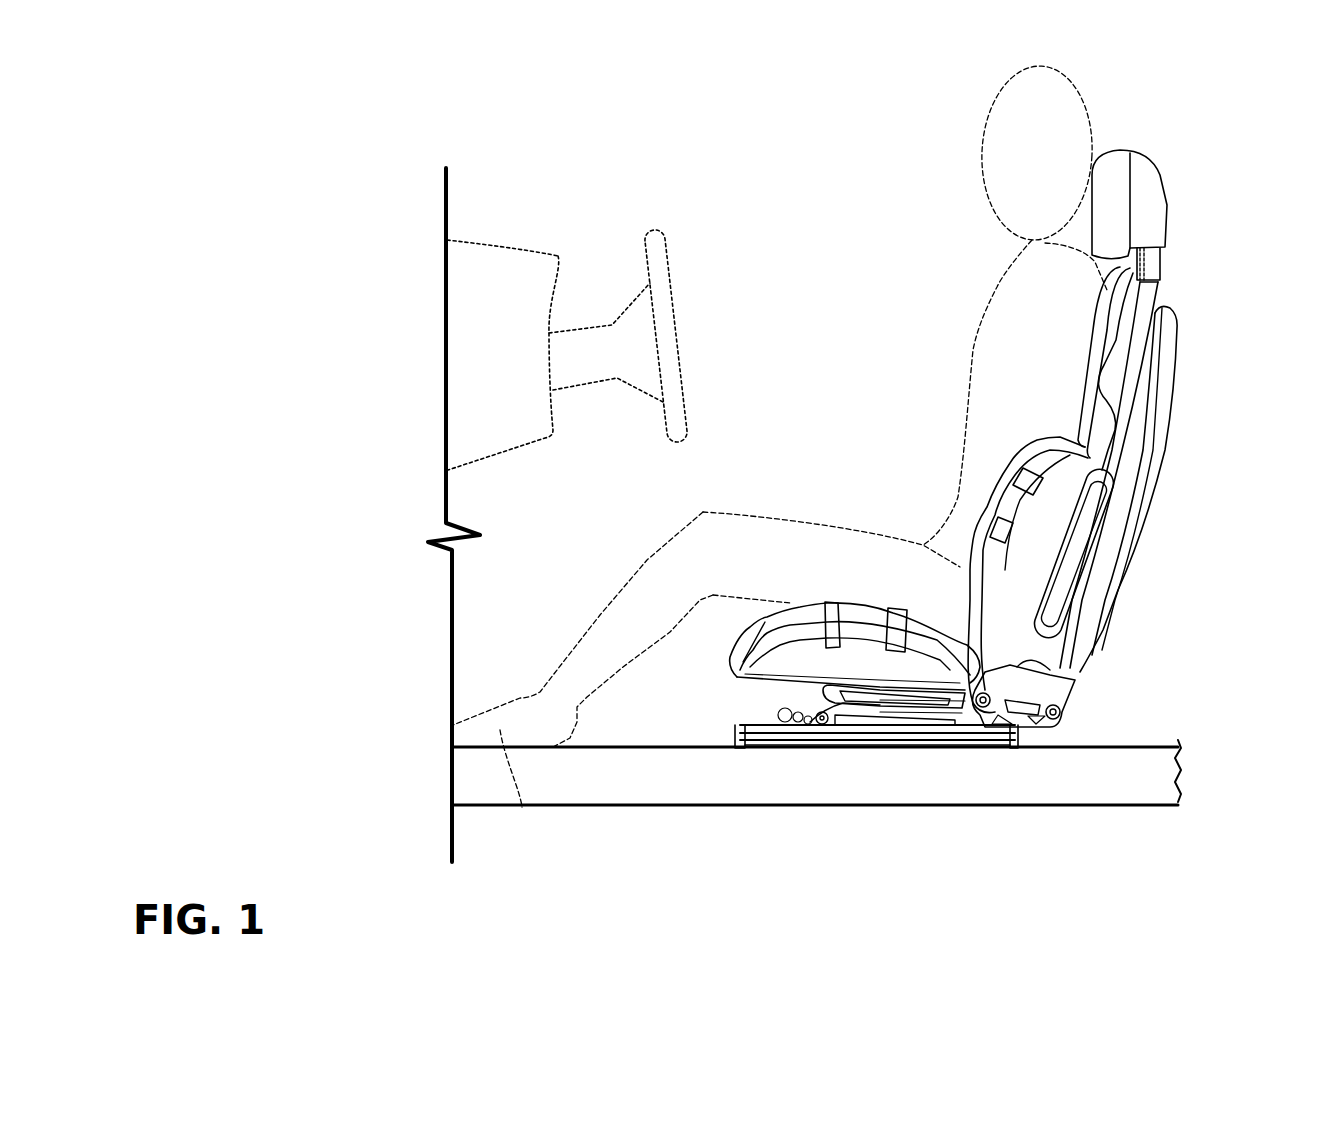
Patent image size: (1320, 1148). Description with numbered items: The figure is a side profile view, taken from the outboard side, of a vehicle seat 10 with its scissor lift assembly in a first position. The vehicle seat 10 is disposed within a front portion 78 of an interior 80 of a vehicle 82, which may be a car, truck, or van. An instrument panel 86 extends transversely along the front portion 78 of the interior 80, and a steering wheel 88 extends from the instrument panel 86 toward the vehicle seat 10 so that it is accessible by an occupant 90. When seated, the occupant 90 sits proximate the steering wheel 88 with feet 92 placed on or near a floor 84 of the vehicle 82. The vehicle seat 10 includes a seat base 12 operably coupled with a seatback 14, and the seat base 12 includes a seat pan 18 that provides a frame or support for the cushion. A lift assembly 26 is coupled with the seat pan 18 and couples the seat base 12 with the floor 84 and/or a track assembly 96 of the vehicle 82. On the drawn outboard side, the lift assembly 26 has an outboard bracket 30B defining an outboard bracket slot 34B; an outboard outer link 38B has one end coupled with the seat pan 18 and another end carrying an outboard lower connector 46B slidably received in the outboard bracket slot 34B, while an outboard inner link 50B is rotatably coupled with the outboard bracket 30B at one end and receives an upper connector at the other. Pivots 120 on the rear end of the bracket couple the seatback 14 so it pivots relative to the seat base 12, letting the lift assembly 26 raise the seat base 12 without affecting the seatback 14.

The vehicle seat 10 is at (987, 489).
The seat base 12 is at (732, 670).
The seatback 14 is at (1123, 377).
The seat pan 18 is at (782, 658).
The lift assembly 26 is at (950, 677).
The outboard bracket 30B is at (890, 724).
The outboard bracket slot 34B is at (973, 728).
The outboard outer link 38B is at (918, 704).
The outboard lower connector 46B is at (1005, 680).
The outboard inner link 50B is at (852, 712).
The front portion 78 is at (512, 560).
The interior 80 is at (590, 175).
The vehicle 82 is at (442, 108).
The floor 84 is at (593, 748).
The instrument panel 86 is at (475, 392).
The steering wheel 88 is at (653, 247).
The occupant 90 is at (980, 307).
The feet 92 is at (522, 807).
The track assembly 96 is at (1017, 753).
The pivots 120 is at (1062, 712).